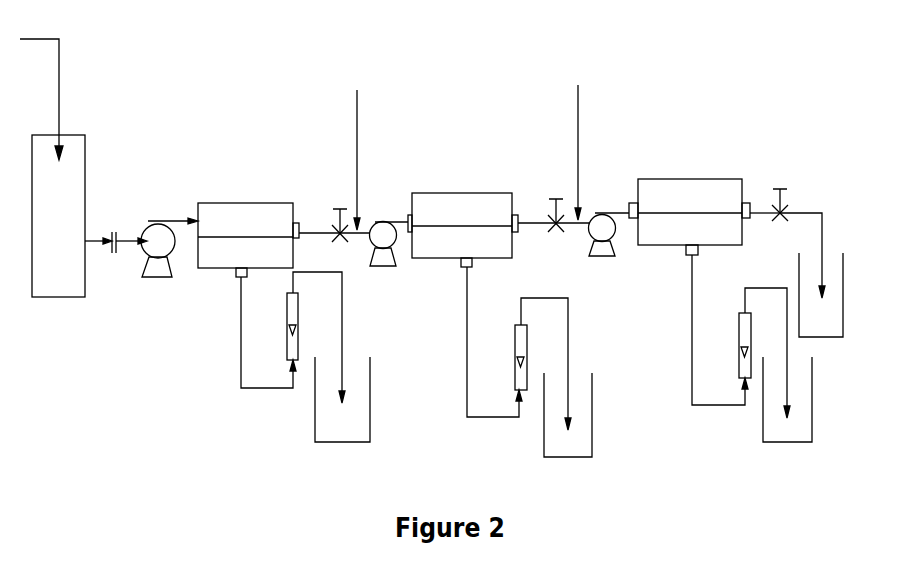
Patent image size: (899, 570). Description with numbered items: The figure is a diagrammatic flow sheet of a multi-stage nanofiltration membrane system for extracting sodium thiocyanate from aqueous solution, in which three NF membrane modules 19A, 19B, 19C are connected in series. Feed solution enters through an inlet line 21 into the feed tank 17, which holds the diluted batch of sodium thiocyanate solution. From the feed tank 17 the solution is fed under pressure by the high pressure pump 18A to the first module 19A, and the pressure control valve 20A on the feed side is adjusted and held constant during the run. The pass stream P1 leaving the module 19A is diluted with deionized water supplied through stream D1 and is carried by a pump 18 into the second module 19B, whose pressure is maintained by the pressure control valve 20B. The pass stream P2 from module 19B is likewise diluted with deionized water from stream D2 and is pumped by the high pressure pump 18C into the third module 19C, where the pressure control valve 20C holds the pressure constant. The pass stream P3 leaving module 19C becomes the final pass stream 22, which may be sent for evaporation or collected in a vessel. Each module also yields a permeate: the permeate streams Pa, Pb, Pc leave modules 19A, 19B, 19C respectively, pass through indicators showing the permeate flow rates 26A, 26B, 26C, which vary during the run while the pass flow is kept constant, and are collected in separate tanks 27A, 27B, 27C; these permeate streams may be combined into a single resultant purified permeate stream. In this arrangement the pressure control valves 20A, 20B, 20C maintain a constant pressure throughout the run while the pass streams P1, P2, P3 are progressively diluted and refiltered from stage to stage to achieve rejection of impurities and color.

The feed inlet line 21 is at (41, 87).
The feed tank 17 is at (58, 216).
The high pressure pump 18A is at (169, 269).
The NF membrane module 19A is at (248, 227).
The pressure control valve 20A is at (332, 209).
The pass stream P1 is at (316, 213).
The deionized water stream D1 is at (368, 160).
The second pump 18 is at (387, 269).
The NF membrane module 19B is at (463, 218).
The pressure control valve 20B is at (553, 203).
The pass stream P2 is at (533, 210).
The deionized water stream D2 is at (590, 152).
The high pressure pump 18C is at (614, 257).
The NF membrane module 19C is at (689, 203).
The pressure control valve 20C is at (781, 188).
The pass stream P3 is at (761, 195).
The final pass stream 22 is at (811, 262).
The permeate stream Pa is at (257, 332).
The permeate stream Pb is at (484, 342).
The permeate stream Pc is at (710, 330).
The permeate flow rate 26A is at (301, 337).
The second flow meter 26B is at (530, 364).
The third flow meter 26C is at (750, 353).
The separate tank 27A is at (342, 416).
The second permeate container 27B is at (568, 432).
The third permeate container 27C is at (787, 419).